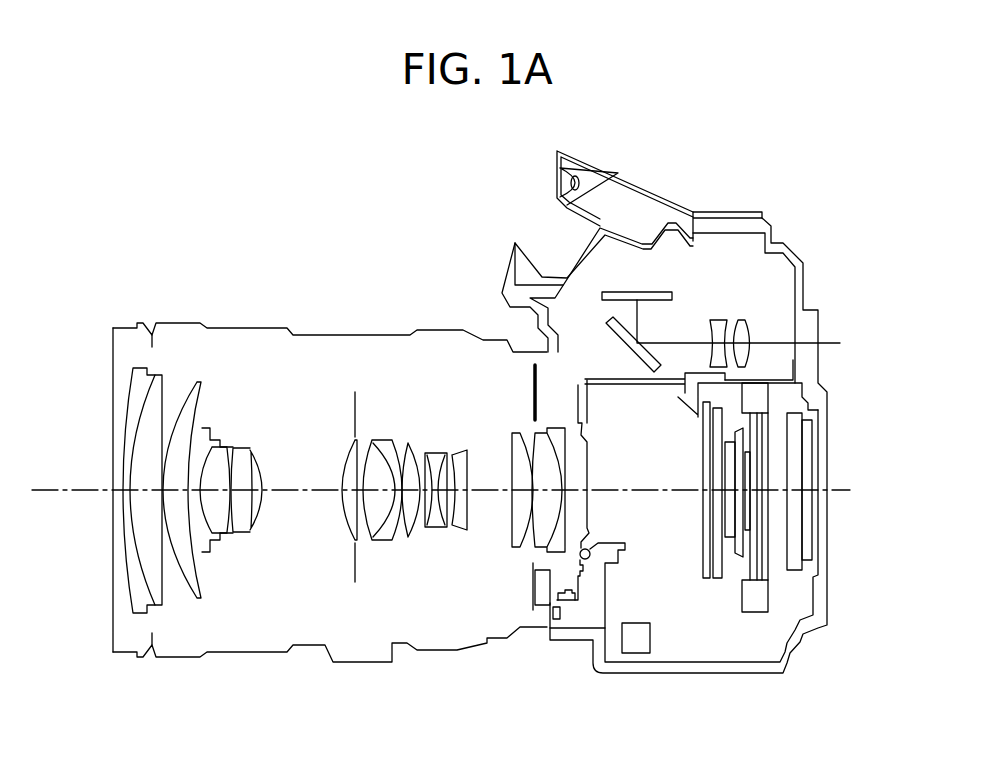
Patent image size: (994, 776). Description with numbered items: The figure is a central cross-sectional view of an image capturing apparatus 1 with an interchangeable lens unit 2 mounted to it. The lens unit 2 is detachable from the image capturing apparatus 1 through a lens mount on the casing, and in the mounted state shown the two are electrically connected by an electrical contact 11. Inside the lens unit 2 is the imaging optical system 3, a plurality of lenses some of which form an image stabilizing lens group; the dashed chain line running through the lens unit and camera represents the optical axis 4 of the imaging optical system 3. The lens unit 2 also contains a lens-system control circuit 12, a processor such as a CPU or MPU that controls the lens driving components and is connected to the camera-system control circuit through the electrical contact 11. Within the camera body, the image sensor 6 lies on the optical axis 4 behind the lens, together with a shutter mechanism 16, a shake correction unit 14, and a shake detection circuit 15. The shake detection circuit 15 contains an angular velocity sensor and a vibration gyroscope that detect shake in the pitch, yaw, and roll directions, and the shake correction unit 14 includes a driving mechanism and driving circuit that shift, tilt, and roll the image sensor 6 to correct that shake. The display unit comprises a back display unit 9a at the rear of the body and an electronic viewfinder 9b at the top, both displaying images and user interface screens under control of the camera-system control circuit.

The image capturing apparatus 1 is at (805, 244).
The lens unit 2 is at (273, 328).
The imaging optical system 3 is at (272, 621).
The optical axis 4 is at (80, 497).
The image sensor 6 is at (752, 517).
The back display unit 9a is at (808, 532).
The electronic viewfinder 9b is at (765, 328).
The electrical contact 11 is at (552, 611).
The lens-system control circuit 12 is at (530, 579).
The shake correction unit 14 is at (753, 605).
The shake detection circuit 15 is at (637, 650).
The shutter mechanism 16 is at (705, 580).